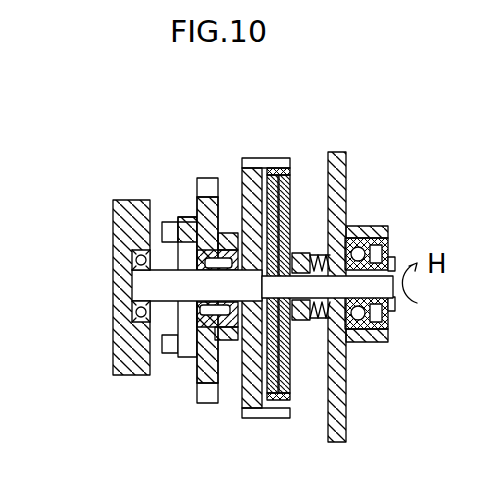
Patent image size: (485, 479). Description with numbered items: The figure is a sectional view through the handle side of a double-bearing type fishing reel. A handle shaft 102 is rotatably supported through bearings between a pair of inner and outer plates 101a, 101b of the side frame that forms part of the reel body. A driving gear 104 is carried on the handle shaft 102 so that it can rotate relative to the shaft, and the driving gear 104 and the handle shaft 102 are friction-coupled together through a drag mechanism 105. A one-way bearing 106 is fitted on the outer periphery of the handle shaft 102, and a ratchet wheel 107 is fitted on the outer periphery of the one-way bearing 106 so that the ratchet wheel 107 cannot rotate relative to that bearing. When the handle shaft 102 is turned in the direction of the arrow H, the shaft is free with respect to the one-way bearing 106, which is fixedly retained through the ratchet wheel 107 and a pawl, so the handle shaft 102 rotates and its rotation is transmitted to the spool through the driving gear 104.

The inner plate 101a is at (113, 339).
The outer plate 101b is at (344, 400).
The handle shaft 102 is at (303, 288).
The driving gear 104 is at (260, 158).
The drag mechanism 105 is at (305, 193).
The one-way bearing 106 is at (230, 343).
The ratchet wheel 107 is at (193, 380).